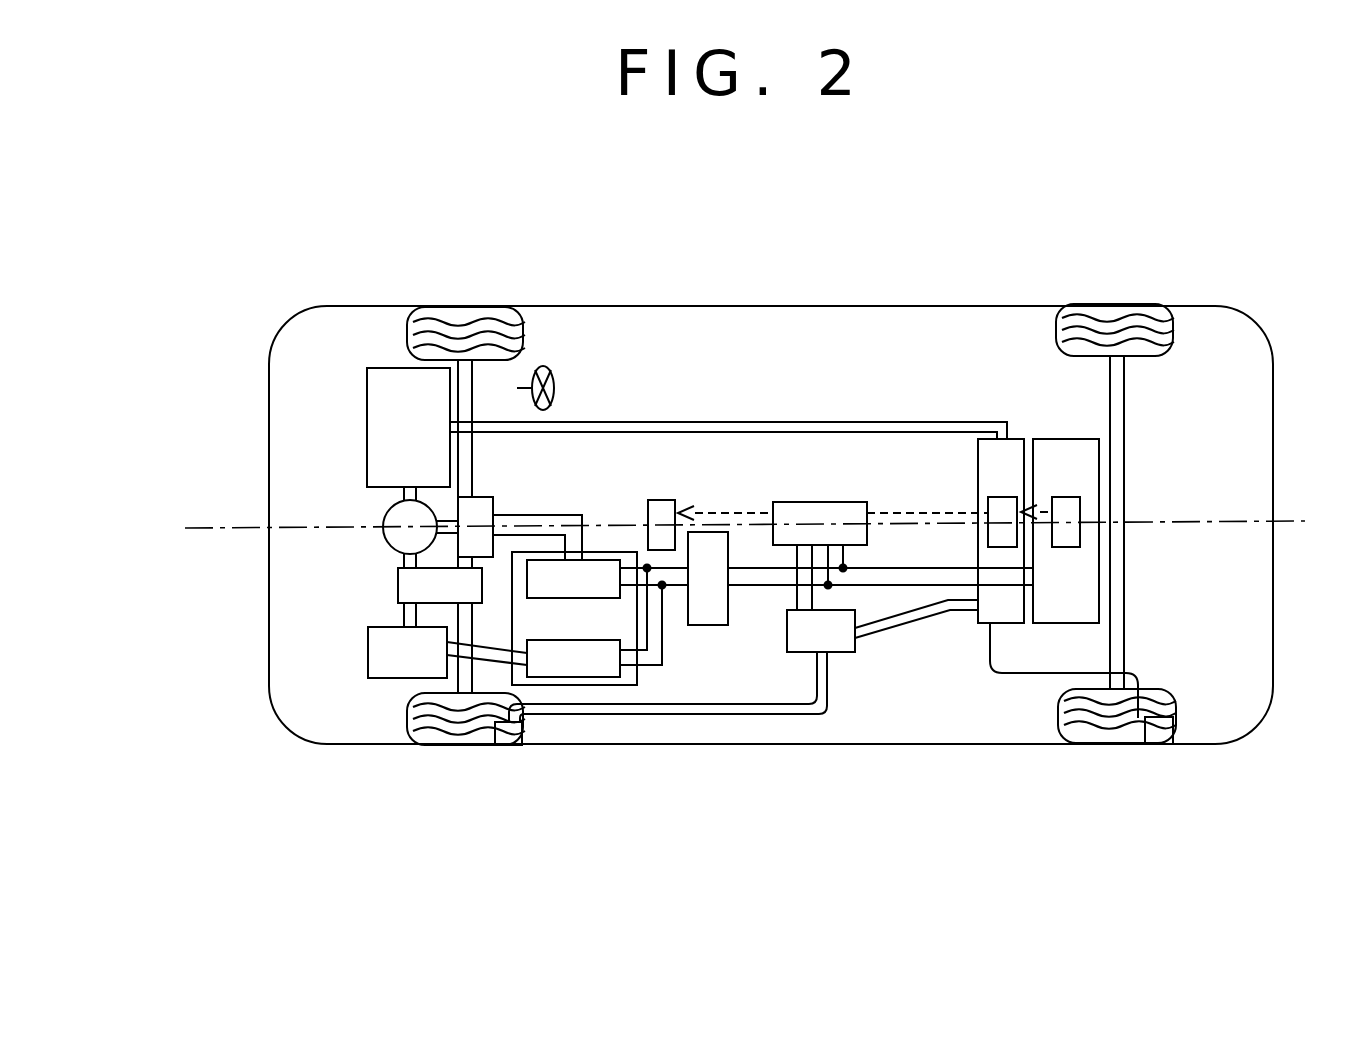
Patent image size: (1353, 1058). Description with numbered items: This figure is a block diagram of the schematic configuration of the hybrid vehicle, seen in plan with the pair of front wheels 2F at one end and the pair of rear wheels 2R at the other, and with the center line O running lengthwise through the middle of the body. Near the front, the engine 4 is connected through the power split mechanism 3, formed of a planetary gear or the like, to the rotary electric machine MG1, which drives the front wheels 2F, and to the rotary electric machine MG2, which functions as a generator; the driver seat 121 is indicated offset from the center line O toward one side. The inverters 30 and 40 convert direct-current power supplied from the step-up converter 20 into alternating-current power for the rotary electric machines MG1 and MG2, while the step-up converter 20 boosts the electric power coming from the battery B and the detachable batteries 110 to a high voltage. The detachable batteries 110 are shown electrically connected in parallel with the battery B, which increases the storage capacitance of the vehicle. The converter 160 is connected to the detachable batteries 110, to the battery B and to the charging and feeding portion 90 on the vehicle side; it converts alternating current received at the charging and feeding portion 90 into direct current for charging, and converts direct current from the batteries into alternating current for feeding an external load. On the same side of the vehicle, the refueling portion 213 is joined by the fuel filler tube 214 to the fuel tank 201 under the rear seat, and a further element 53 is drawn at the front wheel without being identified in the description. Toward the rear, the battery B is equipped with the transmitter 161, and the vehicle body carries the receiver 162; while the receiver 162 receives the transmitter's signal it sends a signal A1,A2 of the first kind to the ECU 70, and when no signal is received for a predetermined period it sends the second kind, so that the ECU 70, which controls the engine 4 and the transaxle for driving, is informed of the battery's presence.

The front wheels 2F is at (463, 310).
The rear wheels 2R is at (1115, 723).
The power split mechanism 3 is at (383, 513).
The engine 4 is at (367, 430).
The rotary electric machine MG1 is at (367, 653).
The rotary electric machine MG2 is at (493, 510).
The driver seat 121 is at (555, 348).
The ECU 70 is at (663, 500).
The detachable batteries 110 is at (820, 502).
The signals A1,A2 is at (921, 510).
The inverter 30 is at (553, 660).
The inverter 40 is at (593, 585).
The step-up converter 20 is at (710, 625).
The converter 160 is at (842, 652).
The charging and feeding portion 90 is at (508, 746).
The front wheel brake 53 is at (438, 746).
The receiver 162 is at (1007, 497).
The transmitter 161 is at (1067, 497).
The battery B is at (1071, 623).
The fuel tank 201 is at (1003, 623).
The fuel filler tube 214 is at (1043, 676).
The refueling portion 213 is at (1163, 732).
The center line O is at (212, 528).